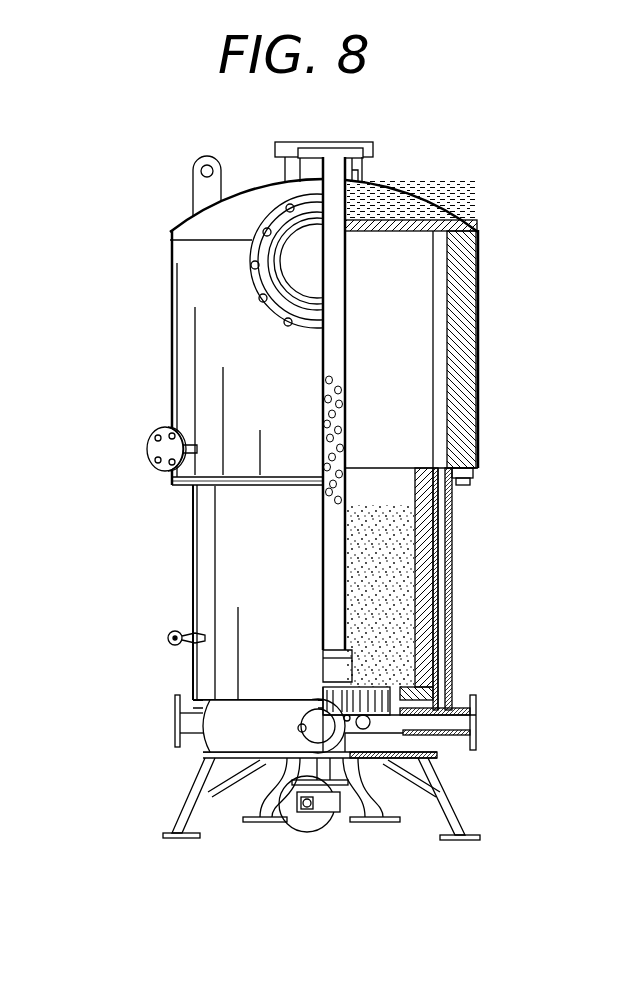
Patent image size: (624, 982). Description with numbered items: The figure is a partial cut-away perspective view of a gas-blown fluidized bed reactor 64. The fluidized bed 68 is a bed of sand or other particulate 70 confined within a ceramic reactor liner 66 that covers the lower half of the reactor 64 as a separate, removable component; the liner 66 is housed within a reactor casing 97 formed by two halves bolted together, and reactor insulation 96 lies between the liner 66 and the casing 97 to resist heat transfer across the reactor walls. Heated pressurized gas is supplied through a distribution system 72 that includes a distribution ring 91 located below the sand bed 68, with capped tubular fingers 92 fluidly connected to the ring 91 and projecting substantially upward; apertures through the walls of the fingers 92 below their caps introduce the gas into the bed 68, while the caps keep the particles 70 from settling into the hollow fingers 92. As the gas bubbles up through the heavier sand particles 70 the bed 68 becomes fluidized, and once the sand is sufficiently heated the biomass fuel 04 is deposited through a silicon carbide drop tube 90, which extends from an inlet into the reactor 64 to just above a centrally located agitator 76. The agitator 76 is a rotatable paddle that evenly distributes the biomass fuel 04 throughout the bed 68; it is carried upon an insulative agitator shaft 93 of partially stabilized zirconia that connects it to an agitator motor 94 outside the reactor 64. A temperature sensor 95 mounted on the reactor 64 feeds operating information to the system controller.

The reactor 64 is at (432, 160).
The drop tube 90 is at (352, 400).
The biomass fuel 04 is at (323, 422).
The particulate 70 is at (450, 498).
The reactor casing 97 is at (453, 515).
The reactor liner 66 is at (450, 542).
The reactor insulation 96 is at (453, 572).
The fluidized bed 68 is at (387, 578).
The agitator 76 is at (362, 667).
The capped tubular fingers 92 is at (380, 690).
The distribution system 72 is at (372, 719).
The distribution ring 91 is at (370, 724).
The agitator shaft 93 is at (320, 703).
The agitator motor 94 is at (328, 802).
The temperature sensor 95 is at (162, 630).